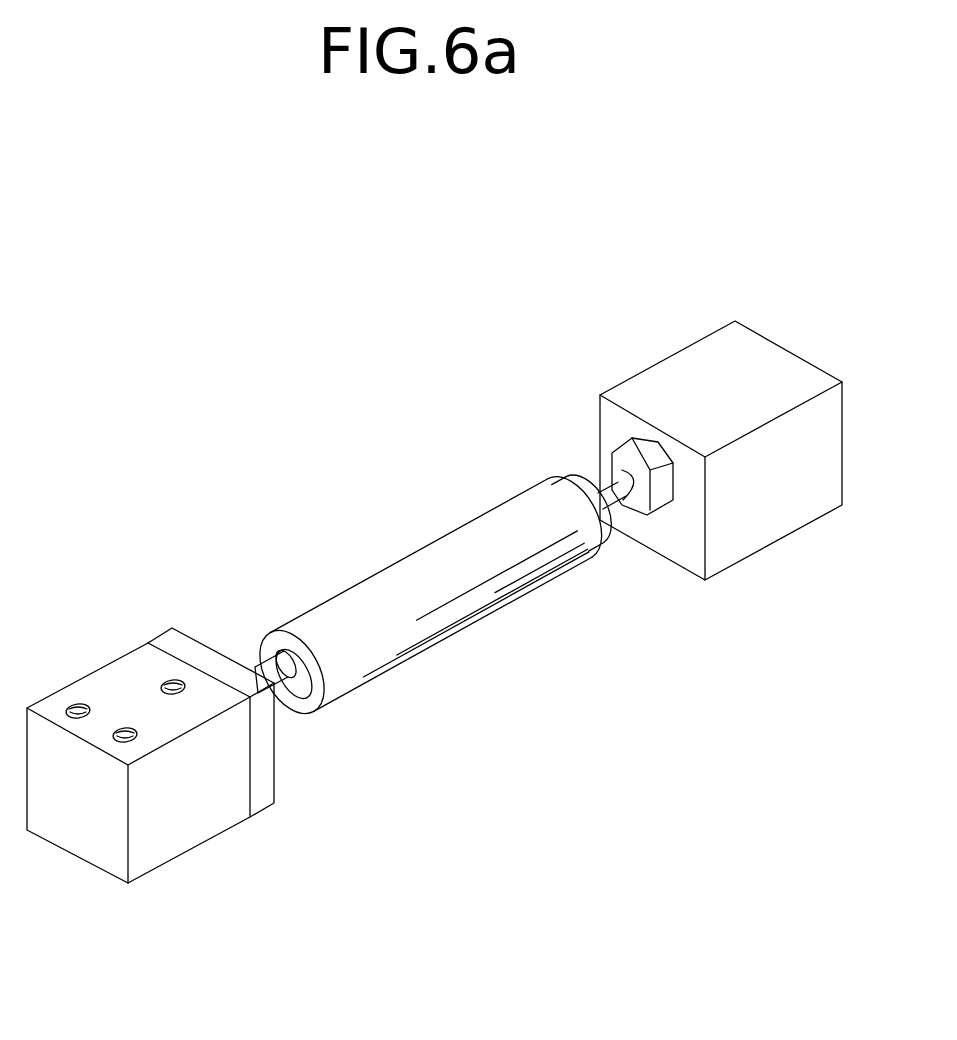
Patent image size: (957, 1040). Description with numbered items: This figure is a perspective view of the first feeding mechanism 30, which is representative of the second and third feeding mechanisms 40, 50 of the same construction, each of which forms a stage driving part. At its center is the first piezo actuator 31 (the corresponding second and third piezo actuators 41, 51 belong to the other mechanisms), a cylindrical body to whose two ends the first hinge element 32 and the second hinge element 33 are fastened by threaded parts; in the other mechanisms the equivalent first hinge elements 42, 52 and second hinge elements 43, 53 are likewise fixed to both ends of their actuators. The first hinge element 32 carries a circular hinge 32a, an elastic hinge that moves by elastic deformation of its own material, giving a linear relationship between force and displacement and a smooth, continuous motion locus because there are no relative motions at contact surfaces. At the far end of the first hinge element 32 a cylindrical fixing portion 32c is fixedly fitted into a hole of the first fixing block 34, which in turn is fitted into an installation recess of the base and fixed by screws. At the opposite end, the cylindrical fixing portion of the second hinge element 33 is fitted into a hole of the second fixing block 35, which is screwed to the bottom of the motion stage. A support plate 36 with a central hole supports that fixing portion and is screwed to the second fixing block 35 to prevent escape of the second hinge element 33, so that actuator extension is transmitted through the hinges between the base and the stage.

The first feeding mechanism 30 is at (302, 415).
The second feeding mechanism 40 is at (499, 477).
The third feeding mechanism 50 is at (404, 528).
The first piezo actuator 31 is at (458, 552).
The second piezo actuator 41 is at (424, 601).
The third piezo actuator 51 is at (424, 601).
The first hinge element 32 is at (568, 478).
The first hinge element 42 is at (582, 513).
The first hinge element 52 is at (582, 513).
The circular hinge 32a is at (614, 503).
The cylindrical fixing portion 32c is at (643, 450).
The second hinge element 33 is at (248, 659).
The second hinge element 43 is at (277, 670).
The second hinge element 53 is at (277, 670).
The first fixing block 34 is at (728, 362).
The second fixing block 35 is at (107, 688).
The support plate 36 is at (185, 643).